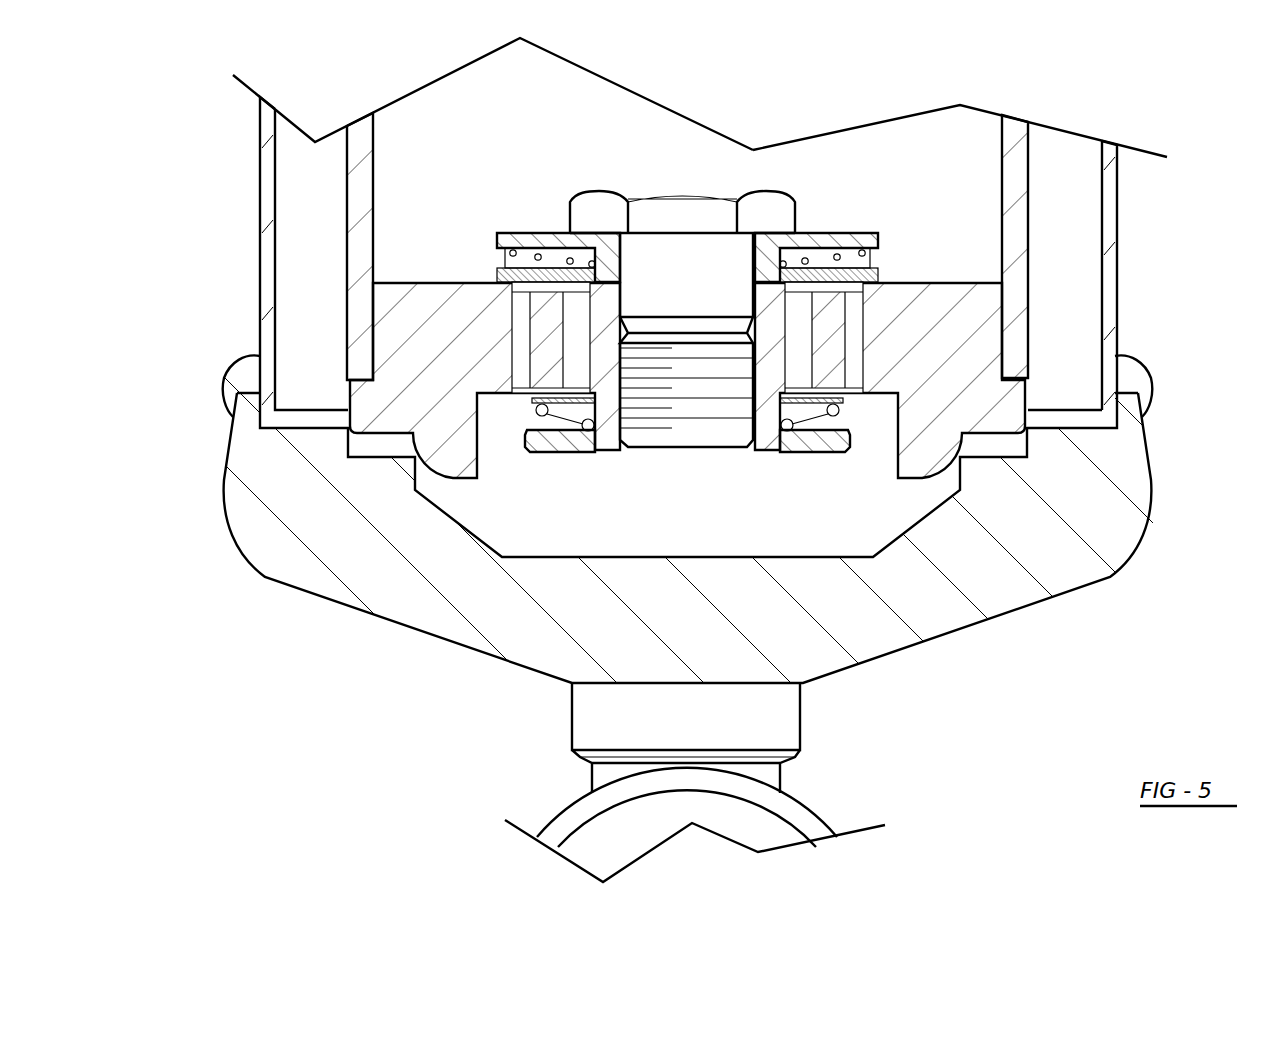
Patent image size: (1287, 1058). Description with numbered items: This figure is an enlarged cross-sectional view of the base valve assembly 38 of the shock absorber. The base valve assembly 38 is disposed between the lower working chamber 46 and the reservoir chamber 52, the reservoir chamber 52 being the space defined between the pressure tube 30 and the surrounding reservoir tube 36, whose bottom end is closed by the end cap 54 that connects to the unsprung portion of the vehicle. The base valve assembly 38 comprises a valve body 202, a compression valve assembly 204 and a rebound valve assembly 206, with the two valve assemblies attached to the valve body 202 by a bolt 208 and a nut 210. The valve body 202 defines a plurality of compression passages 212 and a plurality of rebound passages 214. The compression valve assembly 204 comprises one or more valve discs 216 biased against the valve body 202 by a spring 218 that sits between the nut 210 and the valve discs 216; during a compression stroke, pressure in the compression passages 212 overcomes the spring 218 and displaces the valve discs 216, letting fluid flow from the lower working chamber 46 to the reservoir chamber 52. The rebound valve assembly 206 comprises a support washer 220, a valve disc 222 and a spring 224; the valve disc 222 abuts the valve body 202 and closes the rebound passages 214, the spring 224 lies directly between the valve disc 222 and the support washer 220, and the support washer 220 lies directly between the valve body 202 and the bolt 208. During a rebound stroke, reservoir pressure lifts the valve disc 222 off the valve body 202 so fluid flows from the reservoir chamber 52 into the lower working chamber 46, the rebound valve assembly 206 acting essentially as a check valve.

The pressure tube 30 is at (1015, 150).
The reservoir tube 36 is at (1110, 186).
The base valve assembly 38 is at (898, 153).
The lower working chamber 46 is at (524, 86).
The reservoir chamber 52 is at (1076, 184).
The end cap 54 is at (1058, 550).
The valve body 202 is at (962, 356).
The compression valve assembly 204 is at (508, 520).
The rebound valve assembly 206 is at (452, 168).
The bolt 208 is at (680, 213).
The nut 210 is at (802, 452).
The compression passages 212 is at (577, 335).
The rebound passages 214 is at (850, 323).
The valve discs 216 is at (522, 402).
The spring 218 is at (833, 412).
The support washer 220 is at (866, 244).
The valve disc 222 is at (877, 236).
The spring 224 is at (518, 250).